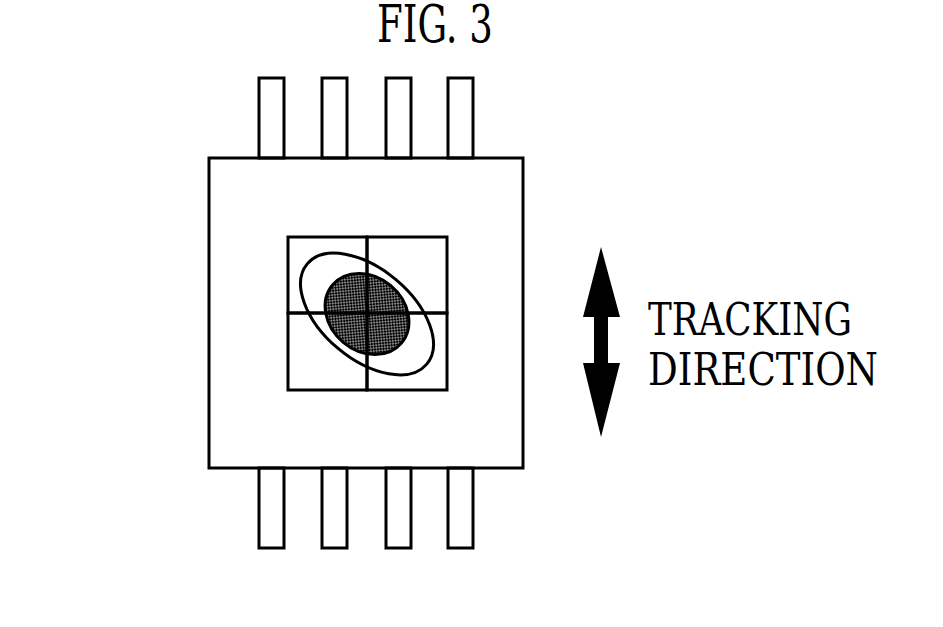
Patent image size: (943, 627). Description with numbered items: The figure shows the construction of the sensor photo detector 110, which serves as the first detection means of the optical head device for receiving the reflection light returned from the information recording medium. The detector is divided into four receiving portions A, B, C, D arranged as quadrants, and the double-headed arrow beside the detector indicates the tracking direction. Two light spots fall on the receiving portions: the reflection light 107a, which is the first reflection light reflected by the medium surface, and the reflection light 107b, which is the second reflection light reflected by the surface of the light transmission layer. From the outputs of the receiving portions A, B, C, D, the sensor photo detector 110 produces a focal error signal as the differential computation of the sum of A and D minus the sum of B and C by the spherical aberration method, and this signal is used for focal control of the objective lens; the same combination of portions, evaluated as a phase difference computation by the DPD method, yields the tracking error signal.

The sensor photo detector 110 is at (537, 390).
The reflection light 107a is at (322, 322).
The reflection light 107b is at (423, 318).
The receiving portion A is at (322, 250).
The receiving portion B is at (415, 248).
The receiving portion C is at (318, 365).
The receiving portion D is at (413, 375).